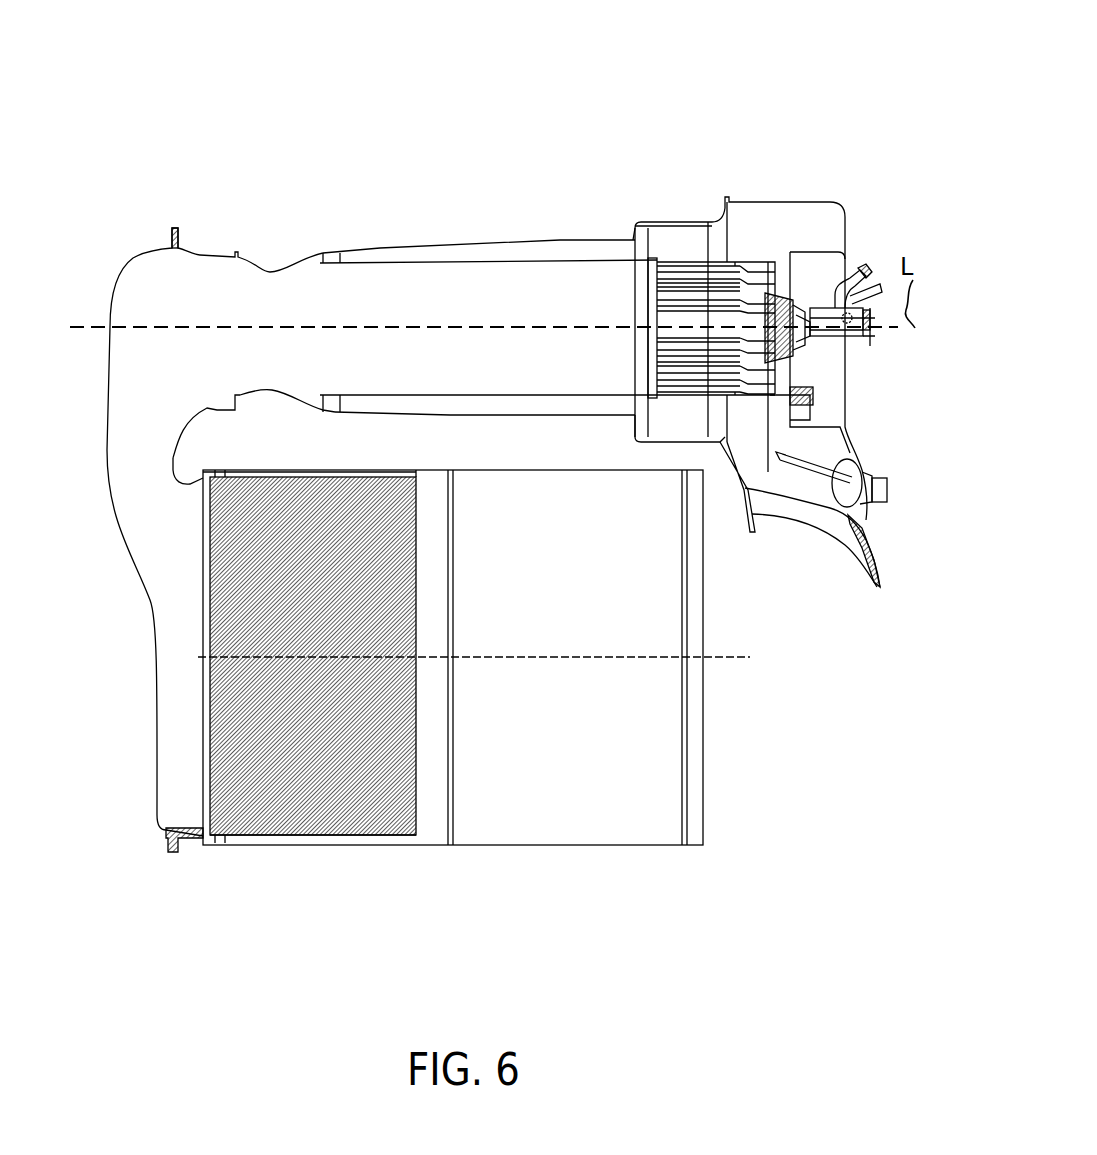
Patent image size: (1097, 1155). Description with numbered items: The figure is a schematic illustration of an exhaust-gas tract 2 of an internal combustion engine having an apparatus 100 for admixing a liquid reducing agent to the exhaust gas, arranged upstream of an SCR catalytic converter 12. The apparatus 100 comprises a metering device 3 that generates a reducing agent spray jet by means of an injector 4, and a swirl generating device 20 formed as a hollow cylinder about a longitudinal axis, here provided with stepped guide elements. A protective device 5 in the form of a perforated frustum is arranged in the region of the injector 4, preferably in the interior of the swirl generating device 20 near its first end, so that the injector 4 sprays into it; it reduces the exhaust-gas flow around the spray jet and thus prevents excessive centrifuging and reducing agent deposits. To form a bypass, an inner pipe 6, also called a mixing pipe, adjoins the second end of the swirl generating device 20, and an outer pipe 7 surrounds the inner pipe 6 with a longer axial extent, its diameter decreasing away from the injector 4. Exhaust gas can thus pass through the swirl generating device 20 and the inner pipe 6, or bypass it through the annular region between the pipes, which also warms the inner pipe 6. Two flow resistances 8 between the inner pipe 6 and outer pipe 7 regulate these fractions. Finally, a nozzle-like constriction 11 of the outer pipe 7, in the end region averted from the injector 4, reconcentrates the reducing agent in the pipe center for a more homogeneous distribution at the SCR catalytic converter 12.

The apparatus 100 is at (824, 130).
The nozzle-like constriction 11 is at (262, 262).
The flow resistances 8 is at (324, 254).
The outer pipe 7 is at (432, 248).
The inner pipe 6 is at (497, 262).
The swirl generating device 20 is at (692, 247).
The protective device 5 is at (777, 290).
The injector 4 is at (802, 328).
The metering device 3 is at (857, 338).
The exhaust-gas tract 2 is at (768, 474).
The SCR catalytic converter 12 is at (480, 808).